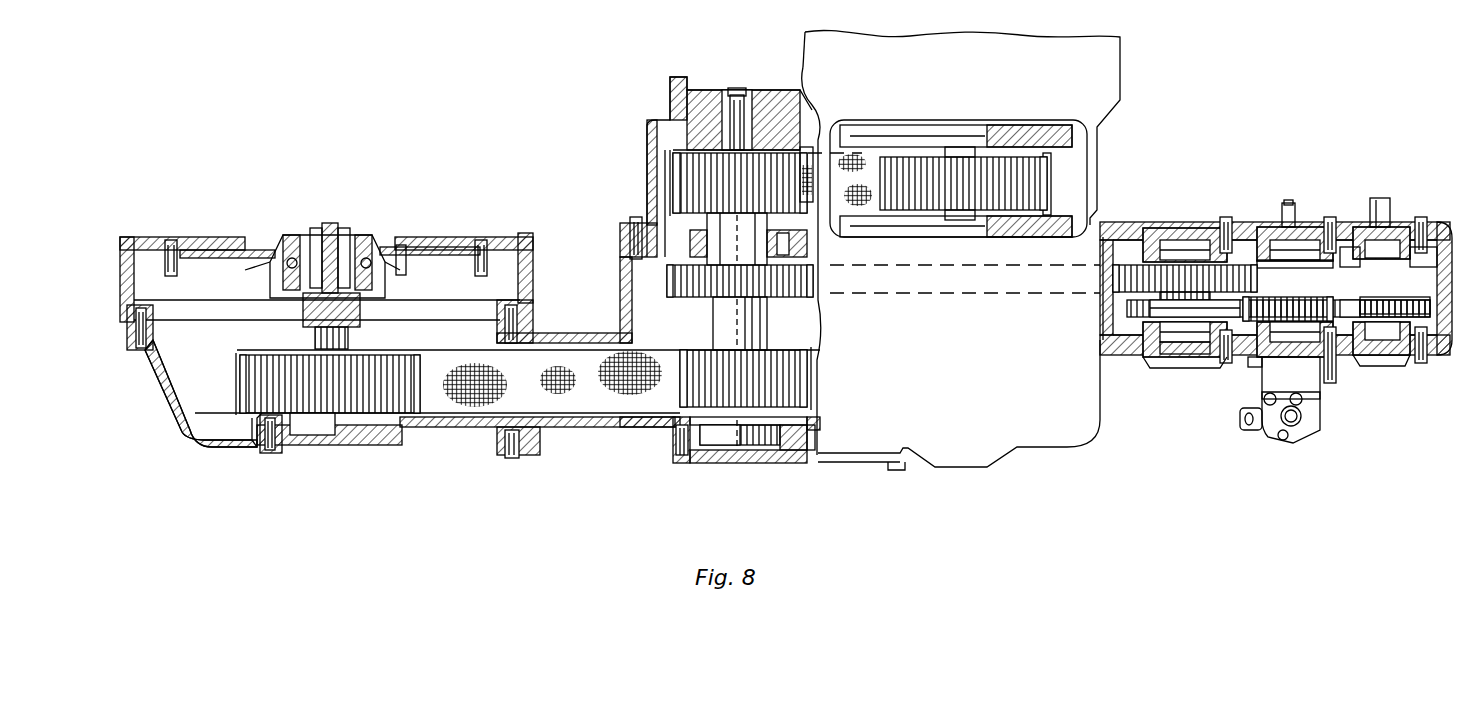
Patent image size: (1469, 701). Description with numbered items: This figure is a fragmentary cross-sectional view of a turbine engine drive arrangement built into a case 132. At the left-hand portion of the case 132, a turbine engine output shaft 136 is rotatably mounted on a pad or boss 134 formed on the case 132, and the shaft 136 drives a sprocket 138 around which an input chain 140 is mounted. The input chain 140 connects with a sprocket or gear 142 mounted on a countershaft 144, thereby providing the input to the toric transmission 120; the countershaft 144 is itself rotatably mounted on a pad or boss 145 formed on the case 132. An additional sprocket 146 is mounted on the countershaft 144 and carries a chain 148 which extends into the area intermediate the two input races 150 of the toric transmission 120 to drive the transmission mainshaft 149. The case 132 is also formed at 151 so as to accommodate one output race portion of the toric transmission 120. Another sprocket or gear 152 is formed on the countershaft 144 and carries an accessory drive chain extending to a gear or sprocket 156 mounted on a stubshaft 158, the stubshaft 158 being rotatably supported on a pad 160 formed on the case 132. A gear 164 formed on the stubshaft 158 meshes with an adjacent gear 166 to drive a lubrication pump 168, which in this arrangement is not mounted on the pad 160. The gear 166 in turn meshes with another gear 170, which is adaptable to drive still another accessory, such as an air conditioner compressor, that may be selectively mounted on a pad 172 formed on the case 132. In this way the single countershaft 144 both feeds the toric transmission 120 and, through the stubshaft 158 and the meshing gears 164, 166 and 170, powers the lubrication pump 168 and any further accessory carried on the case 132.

The toric transmission 120 is at (1108, 62).
The case 132 is at (170, 375).
The pad or boss 134 is at (345, 440).
The turbine engine output shaft 136 is at (330, 340).
The sprocket 138 is at (383, 375).
The input chain 140 is at (507, 390).
The sprocket or gear 142 is at (808, 378).
The countershaft 144 is at (748, 325).
The pad or boss 145 is at (745, 455).
The additional sprocket 146 is at (682, 182).
The chain 148 is at (806, 152).
The transmission mainshaft 149 is at (965, 158).
The input races 150 is at (1060, 212).
The case portion 151 is at (1100, 420).
The sprocket or gear 152 is at (697, 285).
The gear or sprocket 156 is at (1243, 268).
The stubshaft 158 is at (1180, 345).
The pad 160 is at (1215, 350).
The gear 164 is at (1130, 308).
The gear 166 is at (1300, 300).
The lubrication pump 168 is at (1322, 400).
The gear 170 is at (1418, 288).
The pad 172 is at (1398, 350).